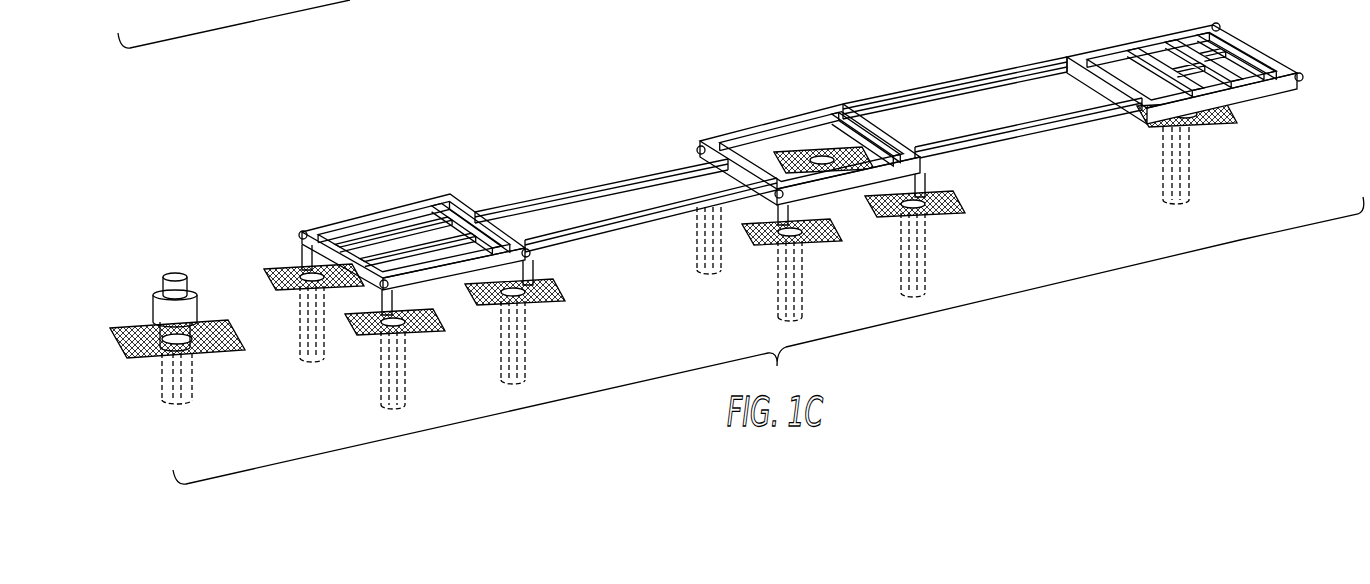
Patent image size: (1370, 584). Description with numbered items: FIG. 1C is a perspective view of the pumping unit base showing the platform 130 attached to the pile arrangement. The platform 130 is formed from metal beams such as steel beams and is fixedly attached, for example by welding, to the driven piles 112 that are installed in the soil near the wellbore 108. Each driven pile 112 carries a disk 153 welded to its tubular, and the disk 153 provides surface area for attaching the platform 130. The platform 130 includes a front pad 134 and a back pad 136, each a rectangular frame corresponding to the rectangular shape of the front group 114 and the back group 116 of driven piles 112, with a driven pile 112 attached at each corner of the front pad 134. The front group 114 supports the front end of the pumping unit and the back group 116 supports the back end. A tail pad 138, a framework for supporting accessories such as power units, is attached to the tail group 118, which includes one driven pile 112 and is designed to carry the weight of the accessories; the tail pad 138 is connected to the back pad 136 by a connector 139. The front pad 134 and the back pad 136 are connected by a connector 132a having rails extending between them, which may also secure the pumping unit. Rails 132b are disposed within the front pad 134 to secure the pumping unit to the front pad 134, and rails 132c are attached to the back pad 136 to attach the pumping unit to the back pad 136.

The wellbore 108 is at (142, 378).
The driven pile 112 is at (525, 334).
The front group 114 is at (452, 366).
The back group 116 is at (843, 275).
The tail group 118 is at (1168, 211).
The platform 130 is at (780, 145).
The connector 132a is at (560, 188).
The rails 132b is at (407, 227).
The rails 132c is at (873, 123).
The front pad 134 is at (414, 220).
The back pad 136 is at (834, 121).
The tail pad 138 is at (1147, 37).
The connector 139 is at (1035, 142).
The disk 153 is at (295, 288).